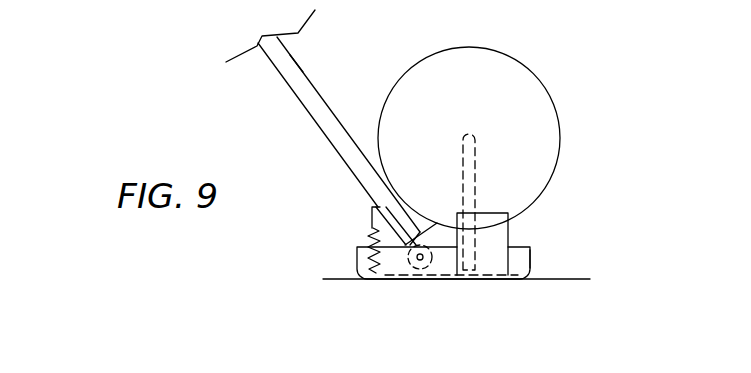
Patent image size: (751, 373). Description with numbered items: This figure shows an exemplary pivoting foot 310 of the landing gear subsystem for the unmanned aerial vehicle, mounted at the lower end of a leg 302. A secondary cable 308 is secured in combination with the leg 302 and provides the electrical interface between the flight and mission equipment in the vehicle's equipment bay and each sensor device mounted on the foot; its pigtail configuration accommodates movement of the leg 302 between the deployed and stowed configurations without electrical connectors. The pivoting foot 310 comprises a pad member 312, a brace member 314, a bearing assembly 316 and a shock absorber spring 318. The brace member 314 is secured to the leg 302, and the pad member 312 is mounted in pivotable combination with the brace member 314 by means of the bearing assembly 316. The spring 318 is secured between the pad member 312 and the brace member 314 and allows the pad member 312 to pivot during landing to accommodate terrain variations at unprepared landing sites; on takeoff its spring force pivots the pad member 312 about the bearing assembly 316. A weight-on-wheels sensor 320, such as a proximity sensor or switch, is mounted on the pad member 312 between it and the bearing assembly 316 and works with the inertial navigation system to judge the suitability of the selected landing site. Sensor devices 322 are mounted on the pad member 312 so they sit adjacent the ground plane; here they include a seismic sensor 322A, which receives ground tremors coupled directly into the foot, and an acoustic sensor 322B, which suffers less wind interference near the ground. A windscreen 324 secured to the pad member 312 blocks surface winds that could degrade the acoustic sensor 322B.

The leg 302 is at (308, 93).
The secondary cable 308 is at (303, 65).
The pivoting foot 310 is at (546, 252).
The pad member 312 is at (532, 264).
The brace member 314 is at (357, 248).
The bearing assembly 316 is at (414, 266).
The shock absorber spring 318 is at (373, 235).
The weight-on-wheels sensor 320 is at (427, 266).
The sensor devices 322 is at (592, 199).
The seismic sensor 322A is at (508, 230).
The acoustic sensor 322B is at (478, 175).
The windscreen 324 is at (498, 100).